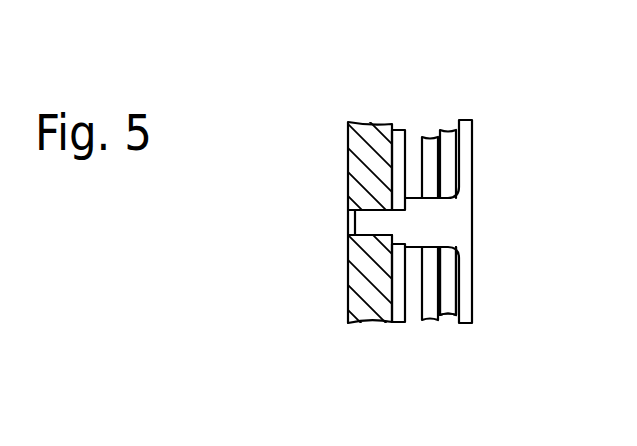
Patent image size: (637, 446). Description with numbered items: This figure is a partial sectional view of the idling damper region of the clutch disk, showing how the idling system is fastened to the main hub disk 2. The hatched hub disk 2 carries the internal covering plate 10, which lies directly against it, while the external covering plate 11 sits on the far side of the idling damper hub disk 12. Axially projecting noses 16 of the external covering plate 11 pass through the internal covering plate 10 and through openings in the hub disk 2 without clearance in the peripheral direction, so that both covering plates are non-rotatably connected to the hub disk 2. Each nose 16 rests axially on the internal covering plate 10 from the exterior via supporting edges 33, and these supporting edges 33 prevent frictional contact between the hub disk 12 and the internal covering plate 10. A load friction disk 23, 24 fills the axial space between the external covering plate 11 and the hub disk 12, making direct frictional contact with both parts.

The hub disk 2 is at (357, 157).
The internal covering plate 10 is at (398, 289).
The noses 16 is at (373, 221).
The supporting edges 33 is at (398, 243).
The external covering plate 11 is at (465, 158).
The load friction disk 23 is at (448, 281).
The load friction disk 24 is at (448, 281).
The hub disk 12 is at (431, 300).